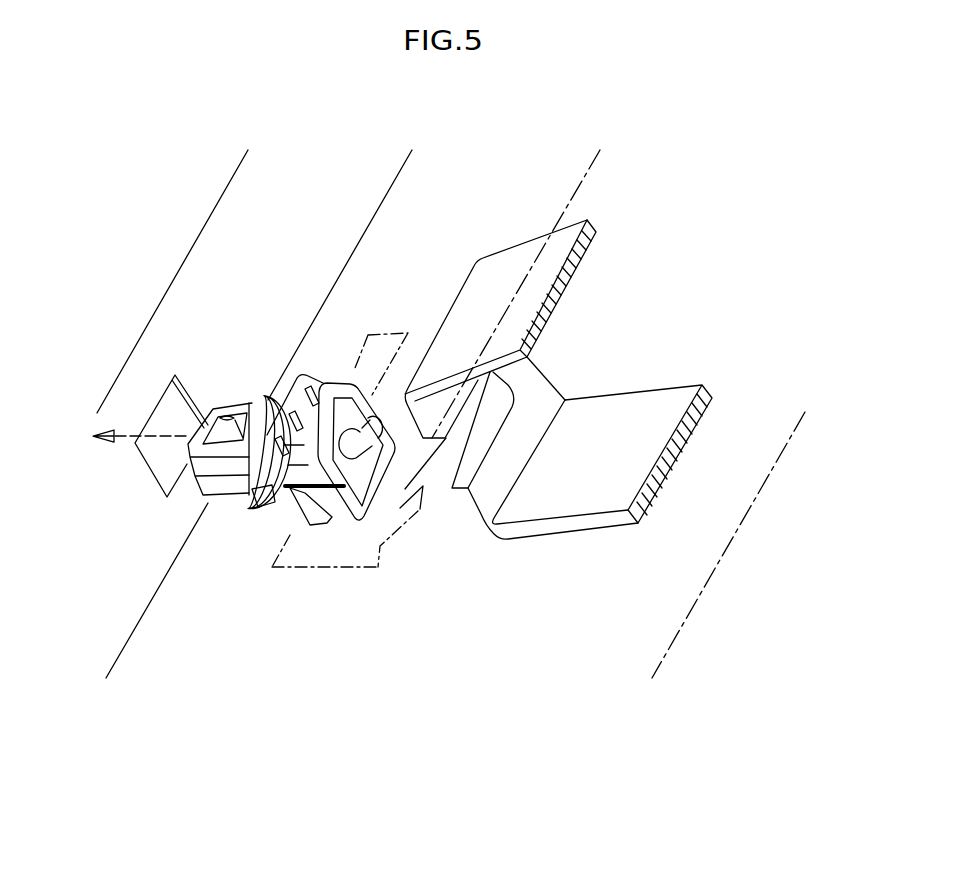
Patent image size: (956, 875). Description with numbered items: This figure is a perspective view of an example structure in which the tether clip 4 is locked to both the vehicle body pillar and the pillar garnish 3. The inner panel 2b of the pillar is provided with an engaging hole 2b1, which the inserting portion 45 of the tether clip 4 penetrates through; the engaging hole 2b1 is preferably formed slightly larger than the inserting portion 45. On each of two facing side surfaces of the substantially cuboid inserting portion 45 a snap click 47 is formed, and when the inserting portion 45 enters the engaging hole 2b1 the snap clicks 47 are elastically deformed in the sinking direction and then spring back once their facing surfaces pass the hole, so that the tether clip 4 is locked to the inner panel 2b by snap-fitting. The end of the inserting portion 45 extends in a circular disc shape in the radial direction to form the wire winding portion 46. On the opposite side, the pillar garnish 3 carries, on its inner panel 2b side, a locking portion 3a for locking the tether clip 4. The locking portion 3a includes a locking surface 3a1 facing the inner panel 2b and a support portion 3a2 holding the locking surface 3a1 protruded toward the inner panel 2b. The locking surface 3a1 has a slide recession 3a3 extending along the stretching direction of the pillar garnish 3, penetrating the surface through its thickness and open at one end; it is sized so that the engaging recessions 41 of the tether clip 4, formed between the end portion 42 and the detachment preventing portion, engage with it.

The inner panel 2b is at (170, 313).
The engaging hole 2b1 is at (172, 395).
The pillar garnish 3 is at (670, 647).
The locking portion 3a is at (553, 427).
The locking surface 3a1 is at (469, 514).
The support portion 3a2 is at (590, 491).
The slide recession 3a3 is at (452, 488).
The tether clip 4 is at (291, 455).
The engaging recessions 41 is at (325, 382).
The end portion 42 is at (337, 390).
The inserting portion 45 is at (235, 494).
The wire winding portion 46 is at (260, 507).
The snap click 47 is at (233, 420).